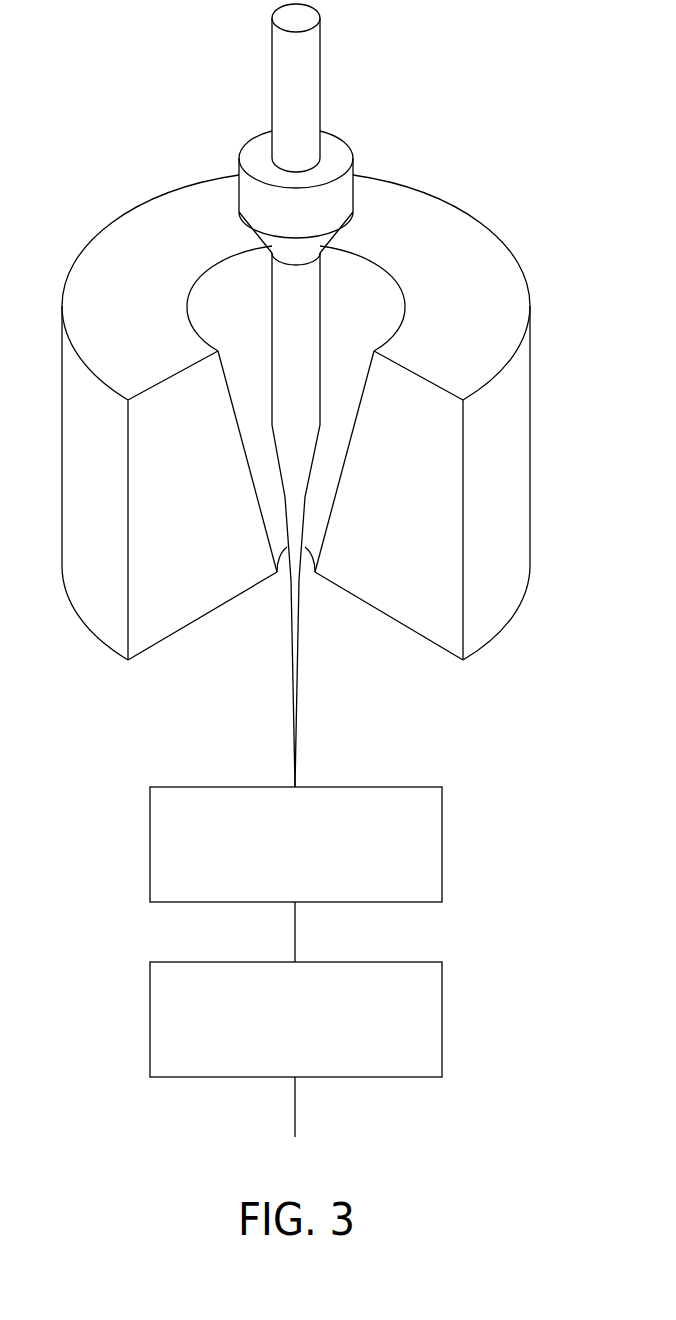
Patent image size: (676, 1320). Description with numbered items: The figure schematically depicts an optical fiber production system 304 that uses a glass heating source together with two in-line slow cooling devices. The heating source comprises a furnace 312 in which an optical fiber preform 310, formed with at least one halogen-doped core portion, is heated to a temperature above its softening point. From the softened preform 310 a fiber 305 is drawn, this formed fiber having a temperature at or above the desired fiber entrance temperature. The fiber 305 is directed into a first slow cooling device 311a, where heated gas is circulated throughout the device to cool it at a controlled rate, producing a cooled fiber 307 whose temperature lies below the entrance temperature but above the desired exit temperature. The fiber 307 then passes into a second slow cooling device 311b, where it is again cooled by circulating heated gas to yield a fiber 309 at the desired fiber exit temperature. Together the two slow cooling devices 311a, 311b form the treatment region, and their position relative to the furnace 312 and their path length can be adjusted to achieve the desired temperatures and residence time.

The production system 304 is at (122, 107).
The furnace 312 is at (497, 236).
The optical fiber preform 310 is at (320, 293).
The fiber 305 is at (293, 762).
The slow cooling device 311a is at (442, 843).
The fiber 307 is at (294, 944).
The slow cooling device 311b is at (442, 1018).
The fiber 309 is at (294, 1119).